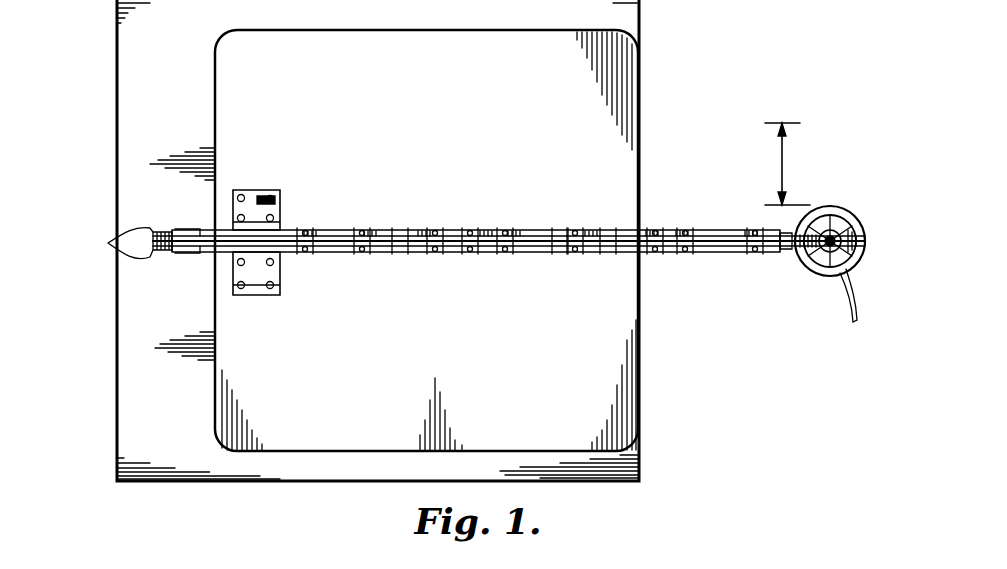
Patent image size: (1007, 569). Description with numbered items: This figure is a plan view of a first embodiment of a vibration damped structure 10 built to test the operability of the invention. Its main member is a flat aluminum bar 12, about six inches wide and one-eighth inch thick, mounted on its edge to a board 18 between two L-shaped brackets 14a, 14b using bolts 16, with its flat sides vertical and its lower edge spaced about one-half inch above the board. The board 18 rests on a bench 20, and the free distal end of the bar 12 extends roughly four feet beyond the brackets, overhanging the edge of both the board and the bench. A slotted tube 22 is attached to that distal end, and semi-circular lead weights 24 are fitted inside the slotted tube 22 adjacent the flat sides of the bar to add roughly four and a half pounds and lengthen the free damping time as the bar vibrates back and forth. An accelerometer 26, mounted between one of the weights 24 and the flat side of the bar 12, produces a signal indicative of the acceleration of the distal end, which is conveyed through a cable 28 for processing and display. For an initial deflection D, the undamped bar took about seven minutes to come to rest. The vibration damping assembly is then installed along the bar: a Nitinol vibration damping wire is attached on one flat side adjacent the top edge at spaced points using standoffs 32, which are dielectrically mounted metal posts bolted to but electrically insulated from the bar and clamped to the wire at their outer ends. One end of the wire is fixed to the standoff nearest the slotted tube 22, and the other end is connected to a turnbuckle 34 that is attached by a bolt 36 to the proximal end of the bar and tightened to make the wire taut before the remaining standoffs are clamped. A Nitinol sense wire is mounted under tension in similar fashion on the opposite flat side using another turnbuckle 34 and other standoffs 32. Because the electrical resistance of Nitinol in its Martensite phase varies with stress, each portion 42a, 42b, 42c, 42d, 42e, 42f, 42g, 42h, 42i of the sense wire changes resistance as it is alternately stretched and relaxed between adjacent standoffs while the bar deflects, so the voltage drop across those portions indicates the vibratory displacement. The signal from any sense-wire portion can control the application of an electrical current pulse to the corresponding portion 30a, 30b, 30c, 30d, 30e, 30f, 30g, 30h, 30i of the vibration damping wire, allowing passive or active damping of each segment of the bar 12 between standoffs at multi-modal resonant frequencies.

The vibration damped structure 10 is at (188, 403).
The flat aluminum bar 12 is at (748, 230).
The L-shaped bracket 14a is at (262, 189).
The L-shaped bracket 14b is at (233, 282).
The bolts 16 is at (285, 203).
The board 18 is at (370, 410).
The bench 20 is at (185, 97).
The slotted tube 22 is at (826, 207).
The semi-circular lead weights 24 is at (848, 214).
The accelerometer 26 is at (838, 270).
The cable 28 is at (850, 320).
The portion of vibration damping wire 30a is at (308, 253).
The portion of vibration damping wire 30b is at (363, 253).
The portion of vibration damping wire 30c is at (435, 253).
The portion of vibration damping wire 30d is at (470, 253).
The portion of vibration damping wire 30e is at (505, 253).
The portion of vibration damping wire 30f is at (575, 253).
The portion of vibration damping wire 30g is at (655, 253).
The portion of vibration damping wire 30h is at (685, 253).
The portion of vibration damping wire 30i is at (755, 253).
The standoffs 32 is at (401, 231).
The turnbuckle 34 is at (186, 226).
The bolt 36 is at (108, 243).
The portion of sense wire 42a is at (311, 231).
The portion of sense wire 42b is at (371, 231).
The portion of sense wire 42c is at (425, 231).
The portion of sense wire 42d is at (486, 231).
The portion of sense wire 42e is at (514, 231).
The portion of sense wire 42f is at (591, 231).
The portion of sense wire 42g is at (653, 231).
The portion of sense wire 42h is at (683, 231).
The portion of sense wire 42i is at (752, 231).
The initial deflection D is at (787, 164).